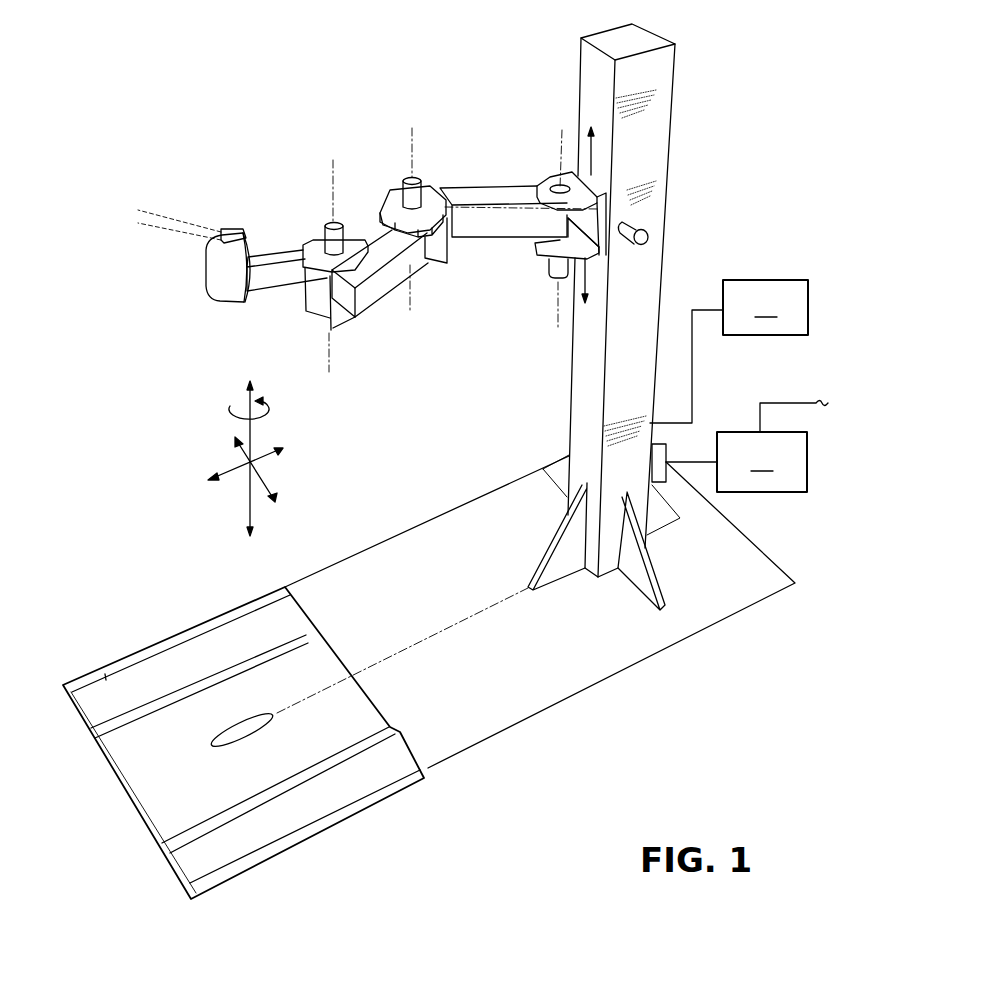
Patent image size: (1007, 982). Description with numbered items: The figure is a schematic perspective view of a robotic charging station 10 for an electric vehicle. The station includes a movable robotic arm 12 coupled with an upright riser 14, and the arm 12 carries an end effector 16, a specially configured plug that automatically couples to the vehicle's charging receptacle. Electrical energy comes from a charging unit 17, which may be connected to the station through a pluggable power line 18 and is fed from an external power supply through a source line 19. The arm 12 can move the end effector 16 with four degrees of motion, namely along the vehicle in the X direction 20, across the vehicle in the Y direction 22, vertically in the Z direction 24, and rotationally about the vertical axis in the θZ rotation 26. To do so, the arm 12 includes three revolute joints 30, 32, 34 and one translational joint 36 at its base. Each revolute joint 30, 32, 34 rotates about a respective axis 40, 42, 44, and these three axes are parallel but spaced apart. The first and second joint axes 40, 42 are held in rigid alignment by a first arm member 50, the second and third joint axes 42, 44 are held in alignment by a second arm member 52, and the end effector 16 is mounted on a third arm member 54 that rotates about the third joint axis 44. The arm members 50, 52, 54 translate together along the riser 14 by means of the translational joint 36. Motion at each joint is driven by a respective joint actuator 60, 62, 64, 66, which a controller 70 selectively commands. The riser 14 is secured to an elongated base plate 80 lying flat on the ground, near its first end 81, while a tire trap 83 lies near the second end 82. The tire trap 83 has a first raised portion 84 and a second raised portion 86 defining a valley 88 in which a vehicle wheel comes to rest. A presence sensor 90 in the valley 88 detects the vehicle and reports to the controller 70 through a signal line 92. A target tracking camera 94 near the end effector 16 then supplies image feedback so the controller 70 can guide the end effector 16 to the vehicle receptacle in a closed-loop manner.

The robotic charging station 10 is at (270, 122).
The robotic arm 12 is at (376, 380).
The riser 14 is at (672, 90).
The end effector 16 is at (228, 300).
The charging unit 17 is at (762, 462).
The pluggable power line 18 is at (682, 482).
The source line 19 is at (794, 403).
The X direction 20 is at (271, 482).
The Y direction 22 is at (226, 471).
The Z direction 24 is at (246, 513).
The θZ rotation 26 is at (230, 413).
The revolute joint 30 is at (512, 172).
The revolute joint 32 is at (394, 175).
The revolute joint 34 is at (286, 219).
The translational joint 36 is at (604, 170).
The joint axis 40 is at (556, 150).
The joint axis 42 is at (410, 128).
The joint axis 44 is at (333, 160).
The first arm member 50 is at (510, 240).
The second arm member 52 is at (378, 305).
The third arm member 54 is at (265, 250).
The joint actuator 60 is at (553, 183).
The joint actuator 62 is at (421, 178).
The joint actuator 64 is at (325, 232).
The joint actuator 66 is at (648, 228).
The controller 70 is at (729, 351).
The base plate 80 is at (585, 690).
The first end 81 is at (737, 646).
The second end 82 is at (158, 889).
The tire trap 83 is at (101, 822).
The first raised portion 84 is at (105, 675).
The second raised portion 86 is at (245, 865).
The valley 88 is at (134, 768).
The presence sensor 90 is at (246, 735).
The signal line 92 is at (462, 645).
The target tracking camera 94 is at (224, 230).